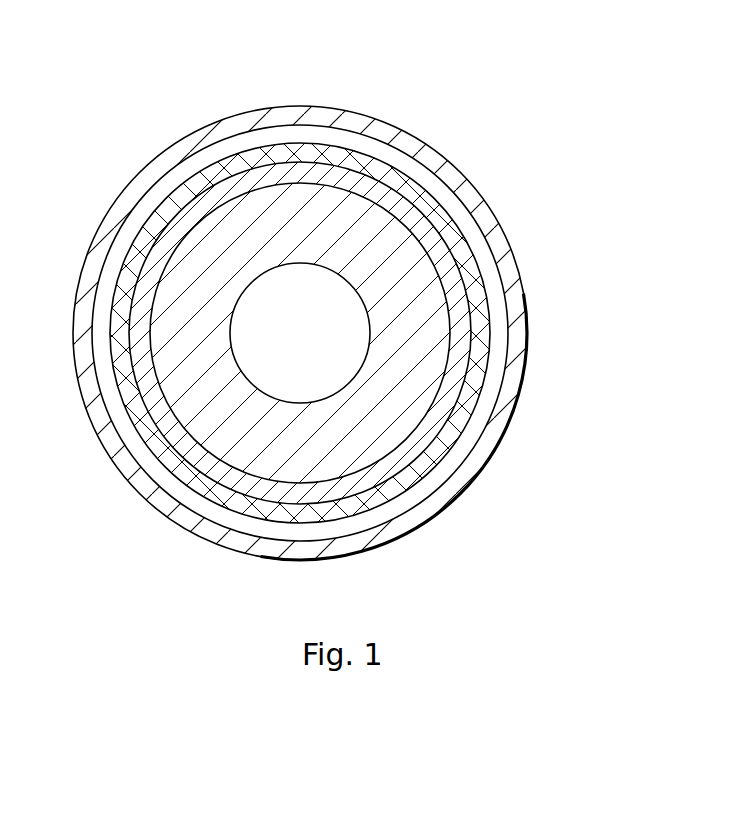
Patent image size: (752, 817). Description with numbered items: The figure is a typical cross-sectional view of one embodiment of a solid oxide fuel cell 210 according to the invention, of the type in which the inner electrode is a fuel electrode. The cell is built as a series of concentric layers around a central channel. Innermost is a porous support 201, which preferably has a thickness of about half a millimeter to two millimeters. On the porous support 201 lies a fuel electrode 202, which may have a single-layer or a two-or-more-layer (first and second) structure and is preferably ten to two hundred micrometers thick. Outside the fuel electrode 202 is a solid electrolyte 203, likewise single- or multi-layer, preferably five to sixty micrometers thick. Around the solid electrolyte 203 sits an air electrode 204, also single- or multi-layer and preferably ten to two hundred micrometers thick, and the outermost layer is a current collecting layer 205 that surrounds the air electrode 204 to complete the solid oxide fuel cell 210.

The solid oxide fuel cell 210 is at (375, 282).
The current collecting layer 205 is at (517, 265).
The air electrode 204 is at (500, 331).
The solid electrolyte 203 is at (490, 364).
The fuel electrode 202 is at (455, 448).
The porous support 201 is at (447, 492).